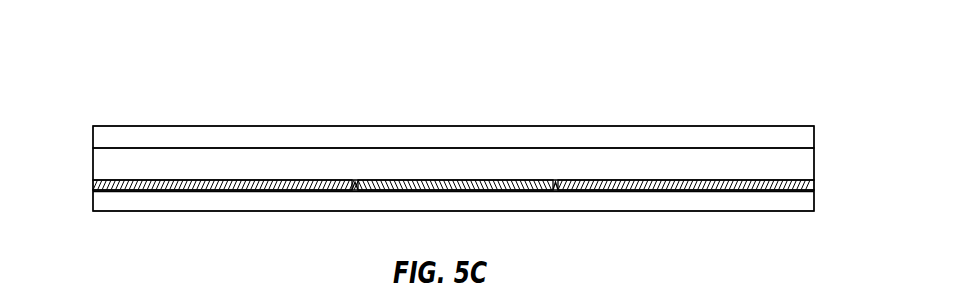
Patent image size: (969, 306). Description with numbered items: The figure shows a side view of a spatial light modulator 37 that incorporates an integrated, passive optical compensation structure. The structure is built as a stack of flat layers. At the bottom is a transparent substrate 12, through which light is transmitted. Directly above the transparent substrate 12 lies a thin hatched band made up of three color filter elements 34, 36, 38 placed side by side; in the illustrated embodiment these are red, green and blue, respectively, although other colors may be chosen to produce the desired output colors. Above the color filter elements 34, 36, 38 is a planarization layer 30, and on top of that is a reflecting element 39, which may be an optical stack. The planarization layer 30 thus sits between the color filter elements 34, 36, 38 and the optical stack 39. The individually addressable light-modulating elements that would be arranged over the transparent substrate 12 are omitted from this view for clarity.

The spatial light modulator 37 is at (141, 83).
The reflecting element 39 is at (815, 138).
The planarization layer 30 is at (93, 170).
The color filter element 34 is at (288, 180).
The color filter element 36 is at (497, 180).
The color filter element 38 is at (728, 180).
The transparent substrate 12 is at (122, 212).